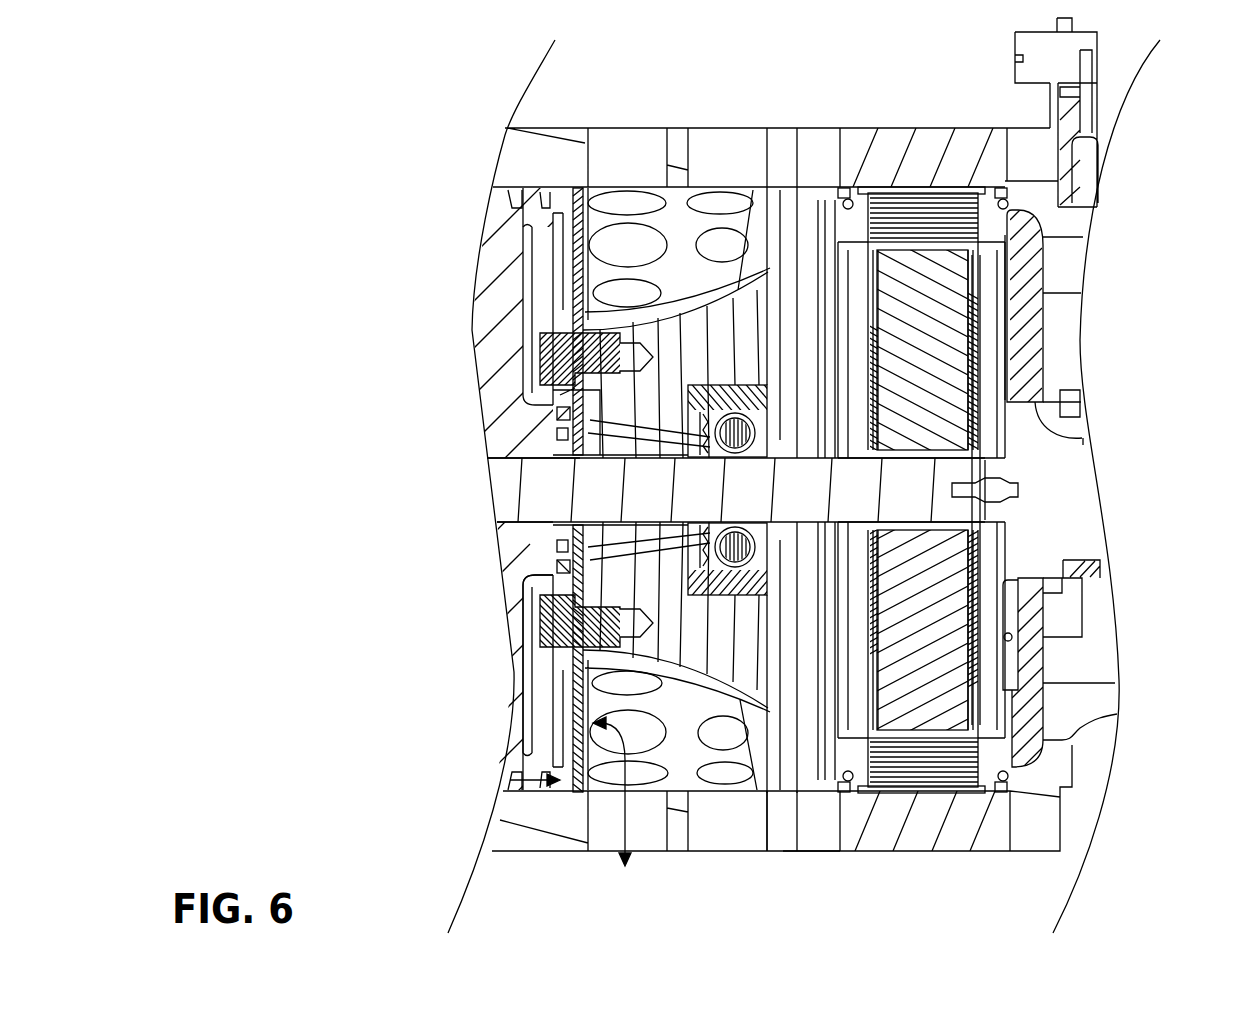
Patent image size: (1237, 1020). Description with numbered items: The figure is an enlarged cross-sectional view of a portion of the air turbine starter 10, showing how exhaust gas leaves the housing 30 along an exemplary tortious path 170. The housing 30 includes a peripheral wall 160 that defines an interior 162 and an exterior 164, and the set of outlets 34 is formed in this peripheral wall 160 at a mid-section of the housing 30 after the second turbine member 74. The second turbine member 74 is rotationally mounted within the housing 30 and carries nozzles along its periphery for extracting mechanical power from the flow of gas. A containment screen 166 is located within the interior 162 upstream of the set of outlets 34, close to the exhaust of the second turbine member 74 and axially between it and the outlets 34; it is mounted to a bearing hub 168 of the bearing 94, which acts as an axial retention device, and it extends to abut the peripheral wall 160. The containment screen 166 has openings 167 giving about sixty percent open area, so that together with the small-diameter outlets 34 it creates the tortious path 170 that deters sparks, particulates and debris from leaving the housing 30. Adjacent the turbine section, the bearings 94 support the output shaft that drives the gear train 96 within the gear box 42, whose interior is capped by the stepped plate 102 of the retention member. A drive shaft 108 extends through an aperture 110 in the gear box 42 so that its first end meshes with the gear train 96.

The air turbine starter 10 is at (545, 92).
The housing 30 is at (803, 126).
The set of outlets 34 is at (726, 145).
The gear box 42 is at (942, 856).
The second turbine member 74 is at (497, 265).
The bearings 94 is at (752, 428).
The gear train 96 is at (954, 782).
The plate 102 is at (540, 333).
The drive shaft 108 is at (1082, 512).
The aperture 110 is at (980, 650).
The peripheral wall 160 is at (555, 813).
The interior 162 is at (700, 760).
The exterior 164 is at (784, 853).
The containment screen 166 is at (587, 213).
The openings 167 is at (575, 208).
The bearing hub 168 is at (552, 390).
The tortious path 170 is at (590, 848).